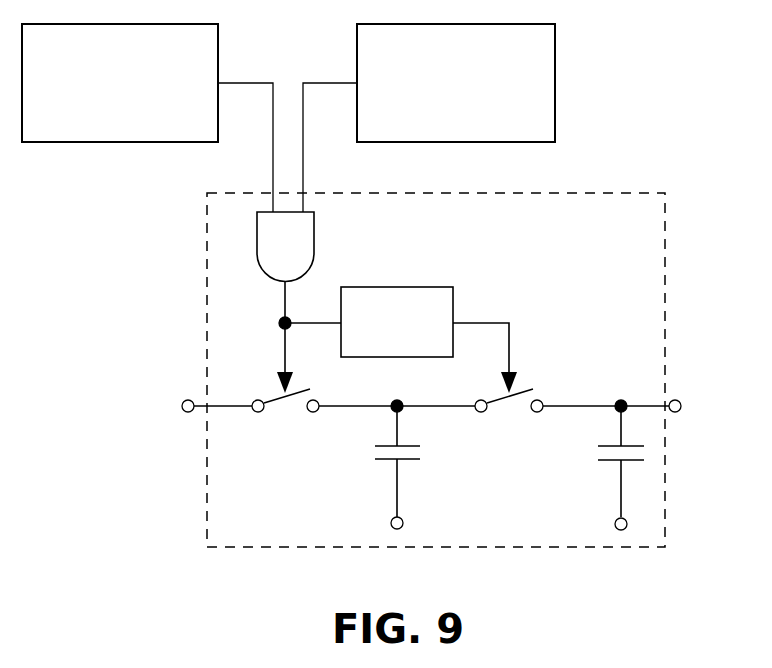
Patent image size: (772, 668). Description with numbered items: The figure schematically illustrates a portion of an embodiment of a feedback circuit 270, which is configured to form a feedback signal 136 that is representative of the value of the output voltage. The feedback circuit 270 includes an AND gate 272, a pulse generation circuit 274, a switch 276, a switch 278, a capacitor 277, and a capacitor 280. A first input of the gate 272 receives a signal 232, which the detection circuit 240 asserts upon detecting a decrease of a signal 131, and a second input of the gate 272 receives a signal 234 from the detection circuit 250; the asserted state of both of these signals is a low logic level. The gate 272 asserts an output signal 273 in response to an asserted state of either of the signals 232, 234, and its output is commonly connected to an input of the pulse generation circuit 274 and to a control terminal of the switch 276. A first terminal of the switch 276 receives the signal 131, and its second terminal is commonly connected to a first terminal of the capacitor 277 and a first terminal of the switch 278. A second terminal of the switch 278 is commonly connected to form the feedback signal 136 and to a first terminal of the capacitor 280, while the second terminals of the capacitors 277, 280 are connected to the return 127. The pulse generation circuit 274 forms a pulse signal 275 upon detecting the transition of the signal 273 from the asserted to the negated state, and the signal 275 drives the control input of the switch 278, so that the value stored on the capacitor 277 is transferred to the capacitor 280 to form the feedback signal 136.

The detection circuit 240 is at (57, 142).
The SR FET turn-off detection block 250 is at (540, 142).
The signal 232 is at (226, 86).
The signal 234 is at (306, 86).
The feedback circuit 270 is at (666, 504).
The AND gate 272 is at (314, 232).
The output signal 273 is at (279, 323).
The pulse generation circuit 274 is at (448, 287).
The pulse signal 275 is at (515, 314).
The switch 276 is at (311, 391).
The capacitor 277 is at (382, 461).
The switch 278 is at (499, 411).
The capacitor 280 is at (612, 462).
The return 127 is at (403, 521).
The signal 131 is at (195, 402).
The feedback signal 136 is at (681, 407).